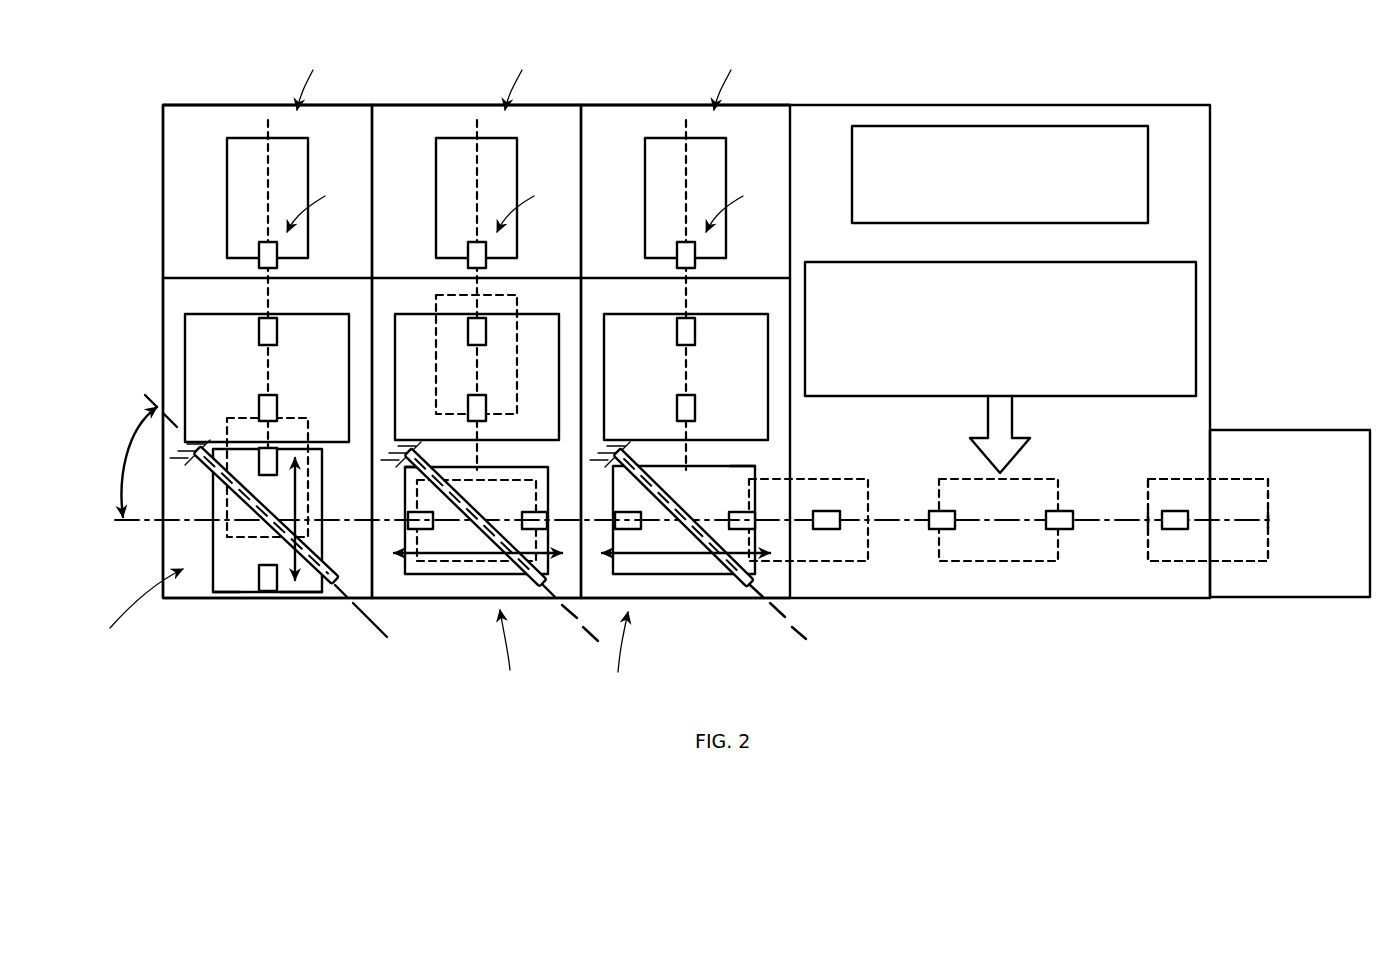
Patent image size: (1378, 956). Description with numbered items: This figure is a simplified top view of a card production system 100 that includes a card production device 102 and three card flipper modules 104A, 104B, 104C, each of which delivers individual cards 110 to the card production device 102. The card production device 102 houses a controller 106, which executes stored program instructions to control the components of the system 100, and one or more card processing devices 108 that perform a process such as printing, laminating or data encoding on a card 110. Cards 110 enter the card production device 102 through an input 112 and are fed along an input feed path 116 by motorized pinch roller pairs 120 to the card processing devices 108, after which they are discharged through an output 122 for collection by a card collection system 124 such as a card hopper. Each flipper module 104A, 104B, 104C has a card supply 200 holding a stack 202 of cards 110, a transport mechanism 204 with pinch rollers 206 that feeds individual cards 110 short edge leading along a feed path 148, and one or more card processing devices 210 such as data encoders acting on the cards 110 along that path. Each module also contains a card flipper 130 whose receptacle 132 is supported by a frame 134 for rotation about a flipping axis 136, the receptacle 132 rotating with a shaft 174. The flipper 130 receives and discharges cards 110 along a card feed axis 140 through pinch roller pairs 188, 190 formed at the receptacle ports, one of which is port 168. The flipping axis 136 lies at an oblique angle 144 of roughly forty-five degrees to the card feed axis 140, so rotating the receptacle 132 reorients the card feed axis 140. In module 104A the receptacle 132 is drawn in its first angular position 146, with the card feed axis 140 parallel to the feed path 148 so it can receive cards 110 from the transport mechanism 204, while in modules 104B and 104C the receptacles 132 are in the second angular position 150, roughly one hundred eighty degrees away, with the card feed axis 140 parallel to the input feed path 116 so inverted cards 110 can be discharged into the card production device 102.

The card production system 100 is at (1214, 40).
The card production device 102 is at (1203, 130).
The card flipper module 104A is at (182, 112).
The card flipper module 104B is at (401, 110).
The card flipper module 104C is at (615, 110).
The controller 106 is at (1130, 190).
The card processing device 108 is at (1183, 302).
The card substrate 110 is at (234, 198).
The input 112 is at (798, 538).
The input feed path 116 is at (1147, 527).
The motorized pinch roller pairs 120 is at (827, 510).
The output 122 is at (1190, 548).
The card collection system 124 is at (1322, 432).
The card flipper 130 is at (215, 549).
The receptacle 132 is at (220, 600).
The frame 134 is at (183, 470).
The flipping axis 136 is at (357, 620).
The card feed axis 140 is at (296, 498).
The oblique angle 144 is at (125, 470).
The first angular position 146 is at (141, 609).
The feed path 148 is at (268, 118).
The second angular position 150 is at (572, 652).
The port 168 is at (303, 598).
The shaft 174 is at (306, 545).
The pinch roller pair 188 is at (272, 450).
The pinch roller pair 190 is at (266, 593).
The card supply 200 is at (336, 110).
The stack 202 is at (525, 78).
The transport mechanism 204 is at (531, 203).
The pinch rollers 206 is at (258, 252).
The card processing devices 210 is at (303, 320).